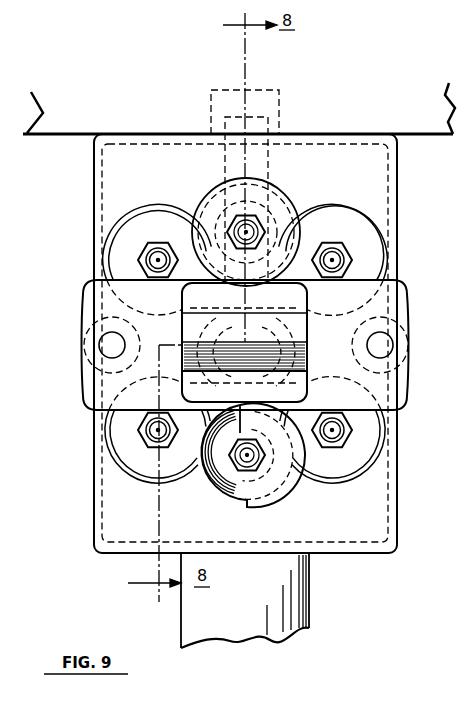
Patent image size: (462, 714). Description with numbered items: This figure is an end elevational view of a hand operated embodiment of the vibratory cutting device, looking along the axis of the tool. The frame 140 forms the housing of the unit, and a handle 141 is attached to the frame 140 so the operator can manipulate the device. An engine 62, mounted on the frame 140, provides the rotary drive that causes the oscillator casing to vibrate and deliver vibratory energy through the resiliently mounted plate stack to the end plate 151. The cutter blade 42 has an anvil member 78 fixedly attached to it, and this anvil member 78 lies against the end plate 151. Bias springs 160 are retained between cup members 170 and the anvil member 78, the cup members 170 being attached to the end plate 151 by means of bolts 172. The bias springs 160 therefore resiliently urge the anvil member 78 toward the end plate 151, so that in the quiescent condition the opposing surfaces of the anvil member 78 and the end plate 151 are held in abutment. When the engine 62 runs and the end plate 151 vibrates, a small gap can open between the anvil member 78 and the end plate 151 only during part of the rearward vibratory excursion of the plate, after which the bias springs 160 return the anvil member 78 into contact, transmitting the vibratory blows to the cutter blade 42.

The cutter blade 42 is at (290, 323).
The engine 62 is at (72, 113).
The anvil member 78 is at (398, 288).
The frame 140 is at (398, 188).
The handle 141 is at (301, 582).
The plate member 151 is at (145, 232).
The bias springs 160 is at (209, 196).
The cup members 170 is at (280, 200).
The bolts 172 is at (240, 457).